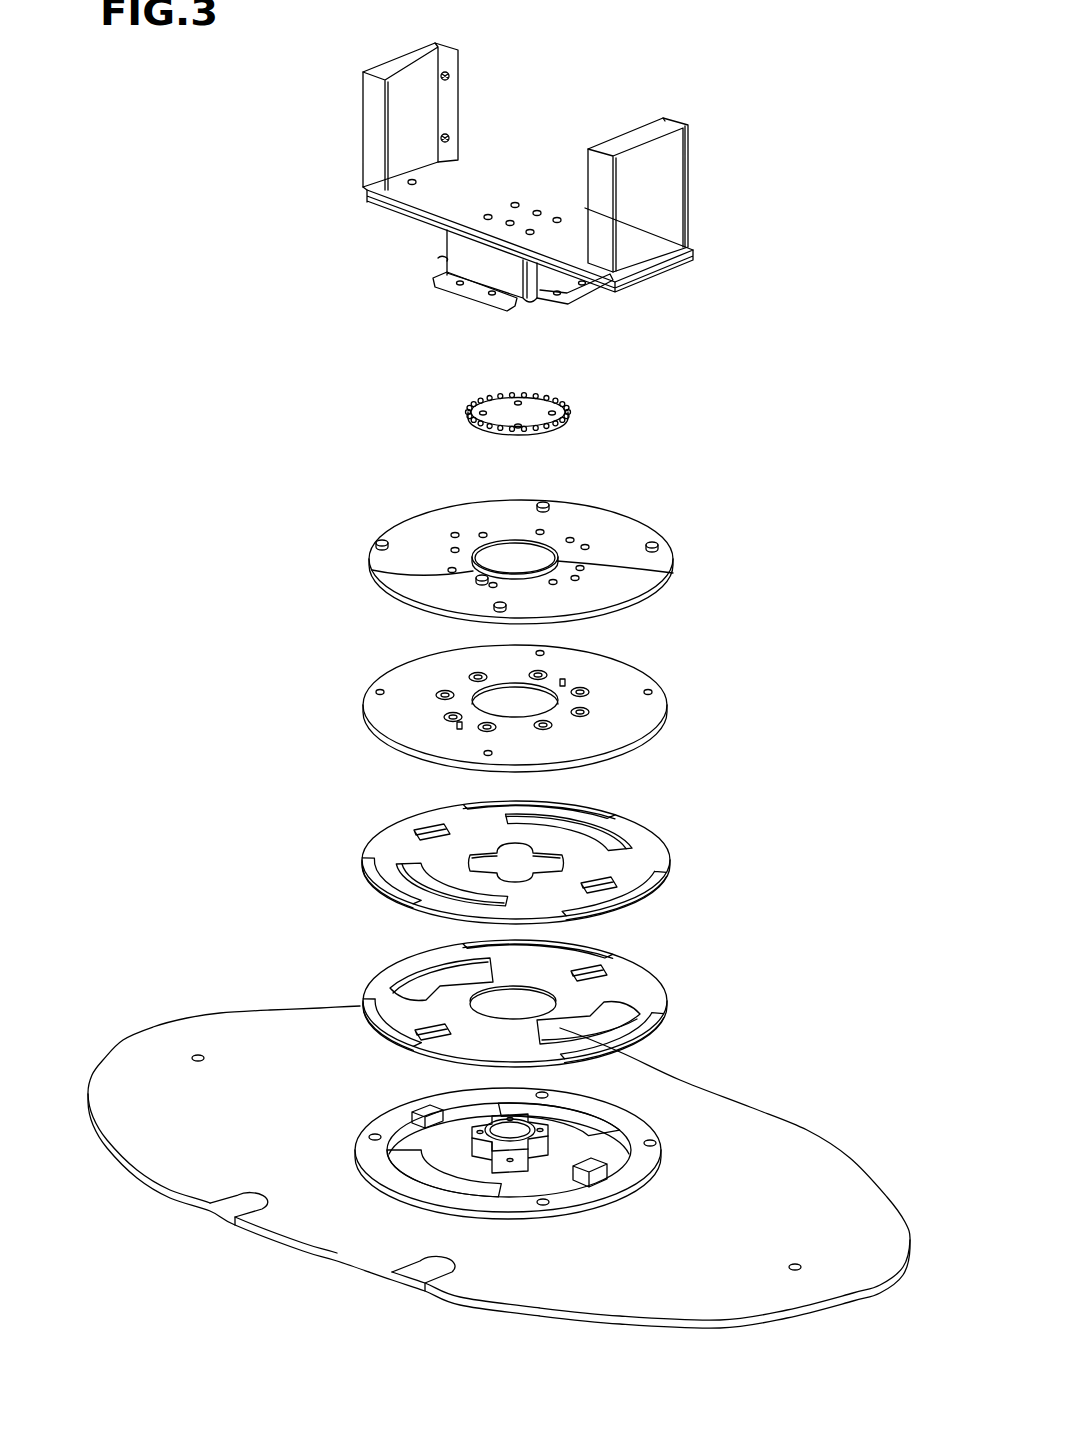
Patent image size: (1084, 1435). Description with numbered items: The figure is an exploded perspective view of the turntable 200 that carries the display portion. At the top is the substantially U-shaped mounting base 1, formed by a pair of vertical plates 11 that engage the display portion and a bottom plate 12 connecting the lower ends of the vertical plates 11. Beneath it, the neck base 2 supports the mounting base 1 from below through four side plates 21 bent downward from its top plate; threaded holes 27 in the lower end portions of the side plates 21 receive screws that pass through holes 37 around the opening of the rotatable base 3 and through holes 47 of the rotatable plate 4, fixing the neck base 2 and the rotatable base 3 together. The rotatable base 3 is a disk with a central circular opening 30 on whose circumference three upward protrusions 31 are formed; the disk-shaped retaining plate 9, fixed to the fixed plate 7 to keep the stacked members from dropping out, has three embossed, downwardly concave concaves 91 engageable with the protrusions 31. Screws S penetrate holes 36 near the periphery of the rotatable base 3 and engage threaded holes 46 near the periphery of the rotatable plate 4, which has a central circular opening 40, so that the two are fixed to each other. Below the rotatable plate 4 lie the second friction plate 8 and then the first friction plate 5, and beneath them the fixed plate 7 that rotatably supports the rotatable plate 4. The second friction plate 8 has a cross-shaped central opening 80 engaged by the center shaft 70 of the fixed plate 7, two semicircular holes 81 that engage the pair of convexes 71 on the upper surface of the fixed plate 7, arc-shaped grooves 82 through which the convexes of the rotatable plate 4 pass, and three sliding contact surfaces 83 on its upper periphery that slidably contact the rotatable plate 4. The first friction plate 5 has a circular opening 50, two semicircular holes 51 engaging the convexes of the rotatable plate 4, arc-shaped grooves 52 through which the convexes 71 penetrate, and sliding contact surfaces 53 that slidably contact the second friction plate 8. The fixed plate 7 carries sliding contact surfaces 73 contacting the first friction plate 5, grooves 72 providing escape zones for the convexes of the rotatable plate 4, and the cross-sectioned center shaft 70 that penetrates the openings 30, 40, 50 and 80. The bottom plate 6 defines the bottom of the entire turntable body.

The turntable 200 is at (751, 106).
The mounting base 1 is at (341, 169).
The vertical plates 11 is at (425, 108).
The bottom plate 12 is at (488, 185).
The neck base 2 is at (404, 261).
The side plates 21 is at (512, 298).
The threaded holes 27 is at (460, 285).
The retaining plate 9 is at (466, 401).
The concaves 91 is at (568, 402).
The rotatable base 3 is at (353, 531).
The circular opening 30 is at (480, 545).
The protrusions 31 is at (506, 536).
The holes 36 is at (656, 540).
The holes 37 is at (395, 572).
The screws S is at (650, 535).
The rotatable plate 4 is at (352, 707).
The circular opening 40 is at (510, 690).
The threaded holes 46 is at (652, 692).
The holes 47 is at (450, 718).
The second friction plate 8 is at (356, 823).
The opening 80 is at (545, 855).
The holes 81 is at (425, 830).
The arc-shaped grooves 82 is at (632, 846).
The sliding contact surfaces 83 is at (582, 806).
The first friction plate 5 is at (354, 966).
The circular opening 50 is at (488, 990).
The holes 51 is at (604, 975).
The arc-shaped grooves 52 is at (405, 978).
The sliding contact surfaces 53 is at (575, 951).
The bottom plate 6 is at (821, 1116).
The fixed plate 7 is at (336, 1136).
The center shaft 70 is at (513, 1160).
The convexes 71 is at (420, 1110).
The grooves 72 is at (612, 1132).
The sliding contact surfaces 73 is at (644, 1165).